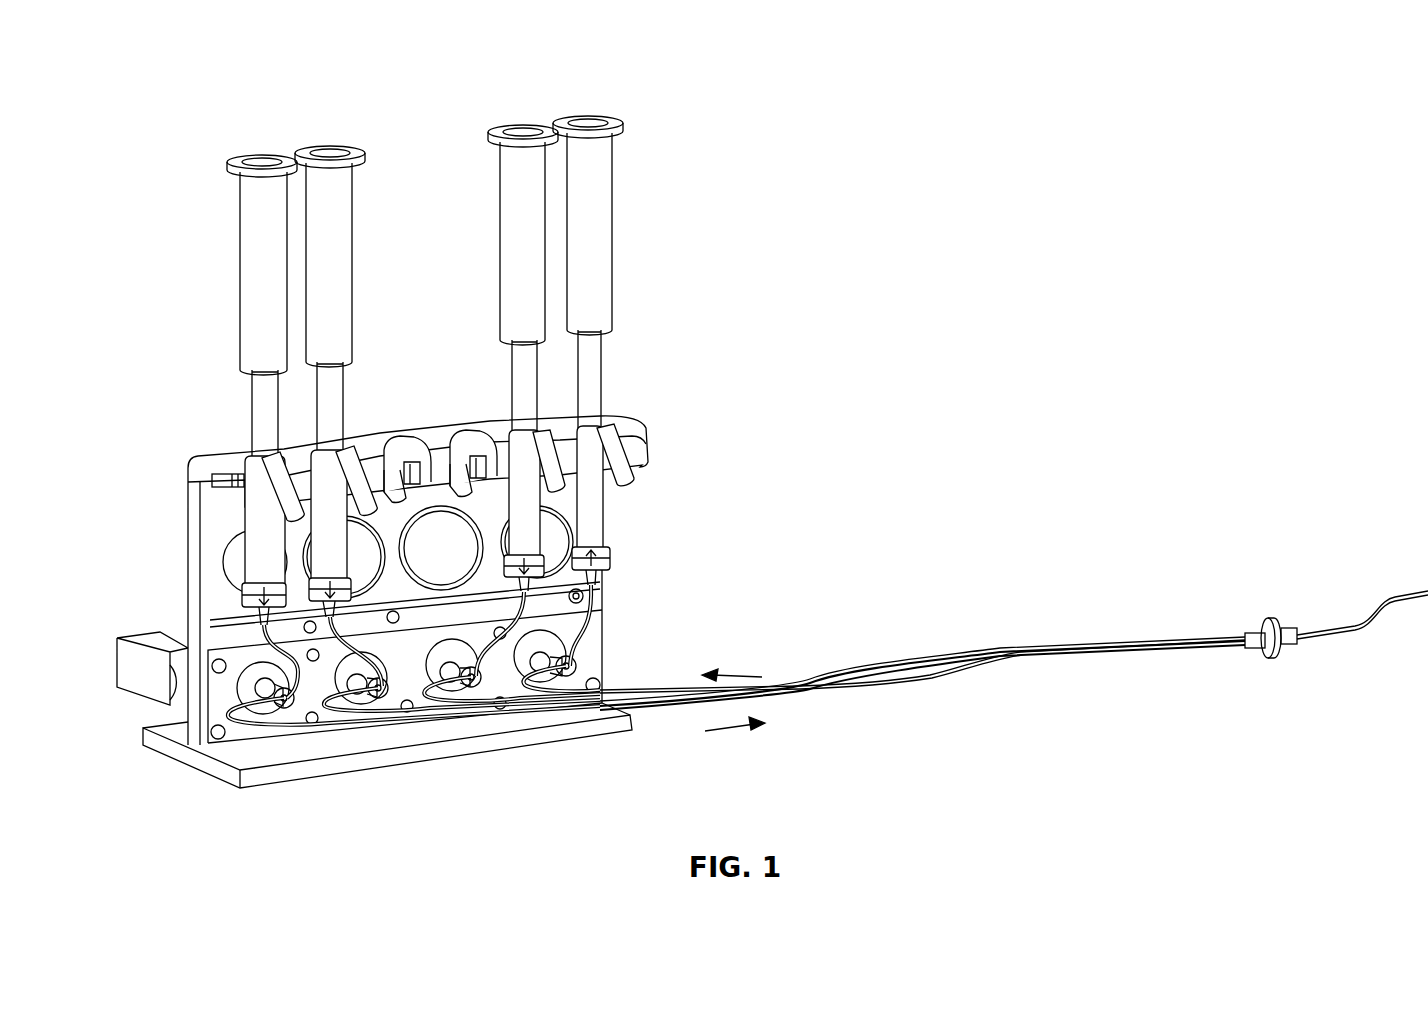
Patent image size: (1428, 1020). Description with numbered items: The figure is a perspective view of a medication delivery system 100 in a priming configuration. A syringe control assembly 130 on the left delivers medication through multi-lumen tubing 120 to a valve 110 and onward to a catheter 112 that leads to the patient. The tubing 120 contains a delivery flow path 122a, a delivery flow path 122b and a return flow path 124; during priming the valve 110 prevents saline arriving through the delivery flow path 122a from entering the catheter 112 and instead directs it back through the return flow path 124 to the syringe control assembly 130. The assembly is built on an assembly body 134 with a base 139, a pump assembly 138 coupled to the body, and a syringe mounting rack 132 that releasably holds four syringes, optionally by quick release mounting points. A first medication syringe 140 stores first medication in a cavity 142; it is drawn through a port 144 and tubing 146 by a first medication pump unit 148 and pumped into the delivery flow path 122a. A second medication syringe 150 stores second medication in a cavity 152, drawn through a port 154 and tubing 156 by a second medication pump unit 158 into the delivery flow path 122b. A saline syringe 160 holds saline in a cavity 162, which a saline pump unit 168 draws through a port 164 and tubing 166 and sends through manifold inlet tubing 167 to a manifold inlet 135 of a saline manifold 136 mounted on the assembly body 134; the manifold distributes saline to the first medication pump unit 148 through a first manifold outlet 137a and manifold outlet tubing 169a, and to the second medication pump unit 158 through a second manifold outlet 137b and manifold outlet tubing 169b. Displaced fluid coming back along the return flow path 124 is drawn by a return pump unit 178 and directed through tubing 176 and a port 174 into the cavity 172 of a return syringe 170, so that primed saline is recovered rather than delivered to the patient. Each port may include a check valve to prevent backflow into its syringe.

The medication delivery system 100 is at (1306, 78).
The valve 110 is at (1272, 625).
The catheter 112 is at (1393, 595).
The multi-lumen tubing 120 is at (1018, 598).
The delivery flow path 122a is at (808, 697).
The delivery flow path 122b is at (878, 658).
The return flow path 124 is at (932, 677).
The syringe control assembly 130 is at (668, 294).
The syringe mounting rack 132 is at (618, 425).
The assembly body 134 is at (400, 572).
The manifold inlet 135 is at (600, 590).
The saline manifold 136 is at (592, 598).
The first manifold outlet 137a is at (310, 724).
The second manifold outlet 137b is at (407, 712).
The pump assembly 138 is at (598, 660).
The base 139 is at (215, 757).
The first medication syringe 140 is at (262, 158).
The cavity 142 is at (262, 404).
The port 144 is at (245, 594).
The tubing 146 is at (250, 650).
The first medication pump unit 148 is at (116, 657).
The second medication syringe 150 is at (330, 150).
The cavity 152 is at (330, 402).
The port 154 is at (308, 580).
The tubing 156 is at (428, 488).
The second medication pump unit 158 is at (372, 697).
The saline syringe 160 is at (523, 128).
The cavity 162 is at (522, 380).
The port 164 is at (548, 562).
The tubing 166 is at (527, 692).
The manifold inlet tubing 167 is at (560, 692).
The saline pump unit 168 is at (487, 698).
The manifold outlet tubing 169a is at (312, 706).
The manifold outlet tubing 169b is at (428, 712).
The return syringe 170 is at (590, 118).
The cavity 172 is at (592, 380).
The port 174 is at (610, 563).
The tubing 176 is at (596, 650).
The return pump unit 178 is at (592, 692).